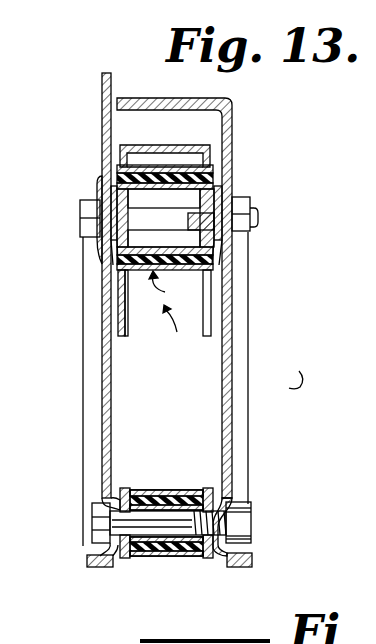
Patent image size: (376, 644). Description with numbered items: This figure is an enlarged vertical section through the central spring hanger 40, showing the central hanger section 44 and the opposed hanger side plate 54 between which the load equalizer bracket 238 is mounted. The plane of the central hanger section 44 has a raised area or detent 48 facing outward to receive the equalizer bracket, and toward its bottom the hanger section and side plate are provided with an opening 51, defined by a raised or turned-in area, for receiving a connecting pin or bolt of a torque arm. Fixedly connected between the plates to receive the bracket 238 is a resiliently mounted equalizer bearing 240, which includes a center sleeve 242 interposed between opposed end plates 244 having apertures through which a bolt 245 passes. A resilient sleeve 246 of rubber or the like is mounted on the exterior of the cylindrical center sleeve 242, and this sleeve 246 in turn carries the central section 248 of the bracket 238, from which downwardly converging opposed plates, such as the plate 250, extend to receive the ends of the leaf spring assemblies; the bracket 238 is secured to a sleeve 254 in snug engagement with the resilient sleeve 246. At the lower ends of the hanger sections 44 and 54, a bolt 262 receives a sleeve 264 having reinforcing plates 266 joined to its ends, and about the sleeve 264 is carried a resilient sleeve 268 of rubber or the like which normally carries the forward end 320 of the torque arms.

The central spring hanger 40 is at (285, 378).
The central hanger section 44 is at (103, 323).
The raised area or detent 48 is at (100, 188).
The opening 51 is at (246, 500).
The hanger side plate 54 is at (234, 343).
The load equalizer bracket 238 is at (186, 331).
The resiliently mounted equalizer bearing 240 is at (178, 288).
The center sleeve 242 is at (141, 196).
The end plates 244 is at (232, 190).
The bolt 245 is at (259, 217).
The resilient sleeve 246 is at (224, 168).
The central section 248 is at (130, 155).
The downwardly converging opposed plate 250 is at (116, 346).
The sleeve 254 is at (208, 274).
The bolt 262 is at (85, 522).
The sleeve 264 is at (168, 493).
The reinforcing plates 266 is at (123, 562).
The resilient sleeve 268 is at (150, 490).
The forward end of torque arm / nut 320 is at (163, 562).